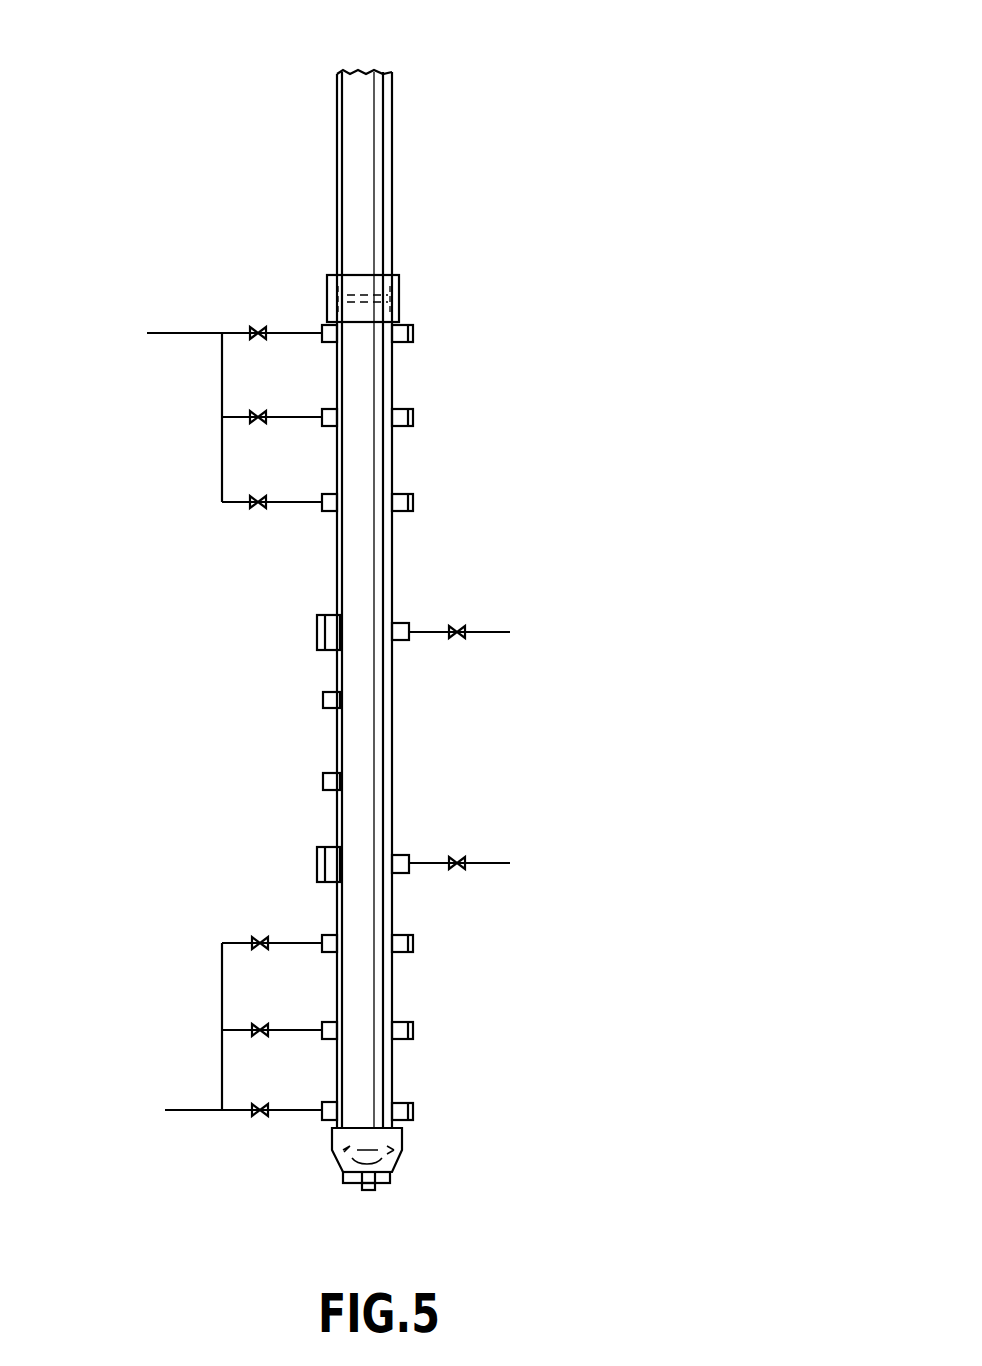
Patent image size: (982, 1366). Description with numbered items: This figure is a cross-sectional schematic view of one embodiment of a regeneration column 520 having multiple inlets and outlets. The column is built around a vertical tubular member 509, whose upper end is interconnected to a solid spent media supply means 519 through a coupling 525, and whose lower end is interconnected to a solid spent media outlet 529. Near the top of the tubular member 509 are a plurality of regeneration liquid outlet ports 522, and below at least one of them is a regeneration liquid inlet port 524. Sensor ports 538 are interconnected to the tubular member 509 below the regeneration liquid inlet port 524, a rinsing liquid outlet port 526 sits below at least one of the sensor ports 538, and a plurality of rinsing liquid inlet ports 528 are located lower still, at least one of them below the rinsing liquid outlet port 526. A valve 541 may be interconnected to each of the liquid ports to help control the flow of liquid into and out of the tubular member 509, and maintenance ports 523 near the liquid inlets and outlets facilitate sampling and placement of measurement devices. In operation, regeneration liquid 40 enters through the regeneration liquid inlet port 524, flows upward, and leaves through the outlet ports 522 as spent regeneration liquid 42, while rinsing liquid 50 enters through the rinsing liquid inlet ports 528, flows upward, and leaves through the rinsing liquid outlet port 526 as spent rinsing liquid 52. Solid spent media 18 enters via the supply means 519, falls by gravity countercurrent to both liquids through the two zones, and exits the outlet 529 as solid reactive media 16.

The solid spent media 18 is at (362, 66).
The solid reactive media 16 is at (367, 1190).
The solid spent media supply means 519 is at (393, 148).
The regeneration column 520 is at (728, 152).
The coupling 525 is at (399, 300).
The regeneration liquid outlet ports 522 is at (322, 325).
The valve 541 is at (257, 327).
The spent regeneration liquid 42 is at (135, 333).
The maintenance ports 523 is at (413, 335).
The tubular member 509 is at (393, 548).
The regeneration liquid 40 is at (531, 632).
The regeneration liquid inlet port 524 is at (400, 640).
The sensor ports 538 is at (323, 700).
The rinsing liquid outlet port 526 is at (398, 855).
The spent rinsing liquid 52 is at (530, 863).
The rinsing liquid inlet ports 528 is at (324, 952).
The rinsing liquid 50 is at (150, 1110).
The solid spent media outlet 529 is at (396, 1152).